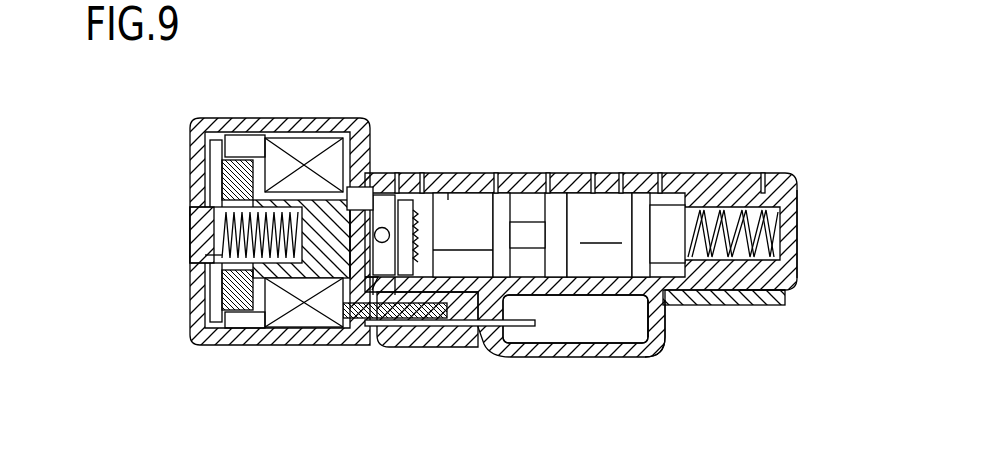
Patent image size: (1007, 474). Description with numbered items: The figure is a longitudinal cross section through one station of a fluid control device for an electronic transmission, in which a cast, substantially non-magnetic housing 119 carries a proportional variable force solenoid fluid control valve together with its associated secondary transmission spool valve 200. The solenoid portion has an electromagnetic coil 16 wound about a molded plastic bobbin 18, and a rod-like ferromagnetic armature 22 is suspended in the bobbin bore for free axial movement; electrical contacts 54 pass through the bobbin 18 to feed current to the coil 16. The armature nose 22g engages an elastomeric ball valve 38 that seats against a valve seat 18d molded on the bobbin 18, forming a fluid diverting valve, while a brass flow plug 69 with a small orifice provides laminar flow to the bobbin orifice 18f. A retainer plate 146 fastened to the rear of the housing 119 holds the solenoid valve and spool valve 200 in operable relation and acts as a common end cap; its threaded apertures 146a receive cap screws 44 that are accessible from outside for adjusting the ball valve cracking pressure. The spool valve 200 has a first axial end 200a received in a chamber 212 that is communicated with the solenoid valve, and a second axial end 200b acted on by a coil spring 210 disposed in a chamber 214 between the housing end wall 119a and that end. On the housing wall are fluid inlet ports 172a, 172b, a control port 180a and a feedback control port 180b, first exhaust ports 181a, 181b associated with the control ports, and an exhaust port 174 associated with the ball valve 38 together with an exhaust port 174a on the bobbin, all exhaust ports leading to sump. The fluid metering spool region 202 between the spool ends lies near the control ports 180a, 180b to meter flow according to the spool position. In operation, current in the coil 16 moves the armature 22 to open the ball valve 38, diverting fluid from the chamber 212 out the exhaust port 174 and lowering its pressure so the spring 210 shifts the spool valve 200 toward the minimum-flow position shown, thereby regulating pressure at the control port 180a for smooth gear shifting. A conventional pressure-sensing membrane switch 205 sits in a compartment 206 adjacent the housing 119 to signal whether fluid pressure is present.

The electromagnetic coil 16 is at (273, 288).
The bobbin 18 is at (235, 346).
The valve seat 18d is at (405, 322).
The orifice 18f is at (402, 192).
The armature 22 is at (300, 298).
The armature nose 22g is at (358, 235).
The ball valve 38 is at (383, 320).
The cap screws 44 is at (194, 220).
The electrical contacts 54 is at (372, 315).
The flow plug 69 is at (440, 327).
The housing 119 is at (196, 124).
The housing end wall 119a is at (790, 270).
The retainer plate 146 is at (200, 178).
The threaded apertures 146a is at (196, 257).
The fluid inlet port 172a is at (426, 195).
The fluid inlet port 172b is at (620, 192).
The exhaust port 174 is at (395, 195).
The exhaust port 174a is at (330, 332).
The control port 180a is at (550, 190).
The control port 180b is at (668, 192).
The first exhaust port 181a is at (495, 192).
The first exhaust port 181b is at (770, 192).
The secondary transmission spool valve 200 is at (599, 225).
The first axial end 200a is at (435, 238).
The second axial end 200b is at (743, 305).
The fluid metering spool region 202 is at (652, 355).
The pressure-sensing membrane switch 205 is at (587, 333).
The compartment 206 is at (663, 345).
The coil spring 210 is at (780, 213).
The chamber 212 is at (448, 196).
The chamber 214 is at (785, 302).